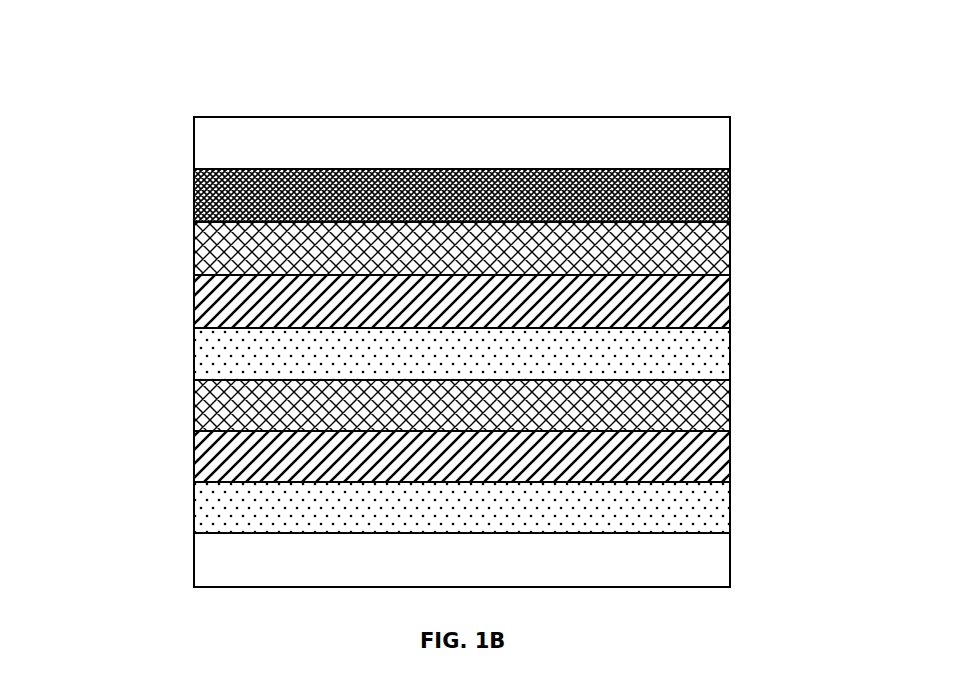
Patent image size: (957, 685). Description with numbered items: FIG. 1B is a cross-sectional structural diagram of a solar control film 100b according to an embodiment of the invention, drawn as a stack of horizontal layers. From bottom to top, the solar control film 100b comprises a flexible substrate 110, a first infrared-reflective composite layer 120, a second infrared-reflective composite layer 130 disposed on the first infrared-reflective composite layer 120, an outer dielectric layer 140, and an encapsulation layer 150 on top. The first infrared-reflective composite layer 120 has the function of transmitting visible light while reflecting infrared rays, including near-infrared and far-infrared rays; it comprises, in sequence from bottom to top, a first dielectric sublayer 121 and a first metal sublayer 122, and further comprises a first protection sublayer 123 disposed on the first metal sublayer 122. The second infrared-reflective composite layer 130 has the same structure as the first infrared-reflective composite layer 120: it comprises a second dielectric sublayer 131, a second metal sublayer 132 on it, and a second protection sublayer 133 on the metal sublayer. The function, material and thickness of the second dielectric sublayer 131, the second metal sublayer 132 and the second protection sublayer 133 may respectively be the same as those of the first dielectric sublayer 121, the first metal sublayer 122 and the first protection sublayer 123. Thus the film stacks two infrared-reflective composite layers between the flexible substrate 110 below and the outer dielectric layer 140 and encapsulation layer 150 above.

The solar control film 100b is at (147, 113).
The flexible substrate 110 is at (731, 554).
The first infrared-reflective composite layer 120 is at (821, 365).
The first dielectric sublayer 121 is at (731, 502).
The first metal sublayer 122 is at (731, 452).
The first protection sublayer 123 is at (731, 397).
The second infrared-reflective composite layer 130 is at (821, 210).
The second dielectric sublayer 131 is at (731, 351).
The second metal sublayer 132 is at (731, 296).
The second protection sublayer 133 is at (731, 241).
The outer dielectric layer 140 is at (731, 186).
The encapsulation layer 150 is at (731, 134).